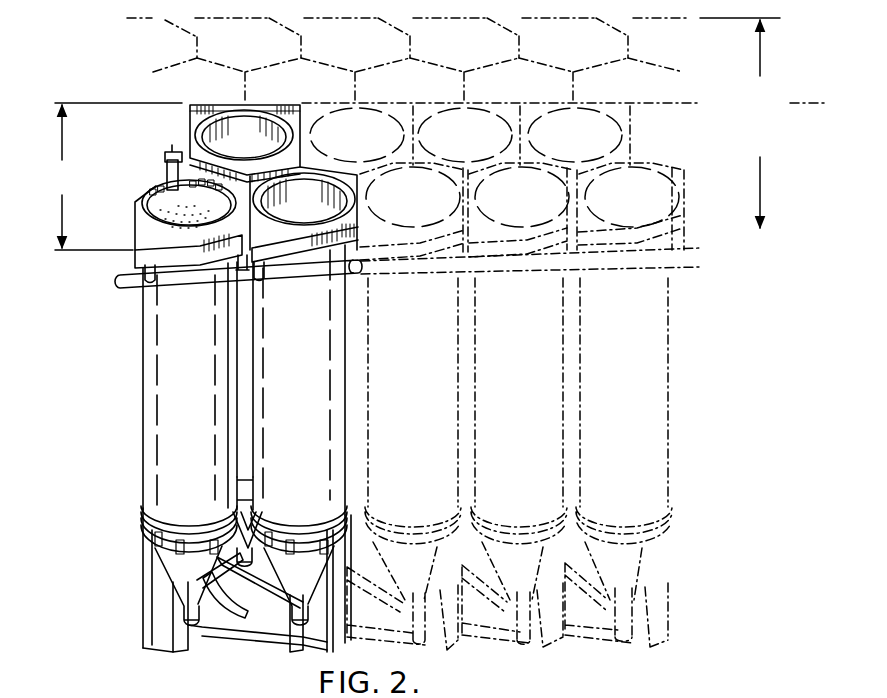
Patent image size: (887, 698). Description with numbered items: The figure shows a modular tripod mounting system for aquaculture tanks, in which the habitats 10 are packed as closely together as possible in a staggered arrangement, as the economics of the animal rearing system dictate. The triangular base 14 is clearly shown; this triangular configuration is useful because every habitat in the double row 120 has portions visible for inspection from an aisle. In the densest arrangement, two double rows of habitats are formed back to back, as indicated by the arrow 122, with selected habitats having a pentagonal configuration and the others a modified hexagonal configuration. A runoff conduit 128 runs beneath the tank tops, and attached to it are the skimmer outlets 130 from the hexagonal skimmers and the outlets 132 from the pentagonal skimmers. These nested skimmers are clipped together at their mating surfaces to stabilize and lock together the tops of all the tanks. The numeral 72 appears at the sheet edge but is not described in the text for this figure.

The habitats 10 is at (224, 378).
The triangular base 14 is at (160, 584).
The stray reference from adjacent figure 72 is at (725, 697).
The double row 120 is at (111, 176).
The arrow 122 is at (740, 123).
The runoff conduit 128 is at (163, 290).
The skimmer outlets 130 is at (137, 287).
The outlets 132 is at (227, 277).